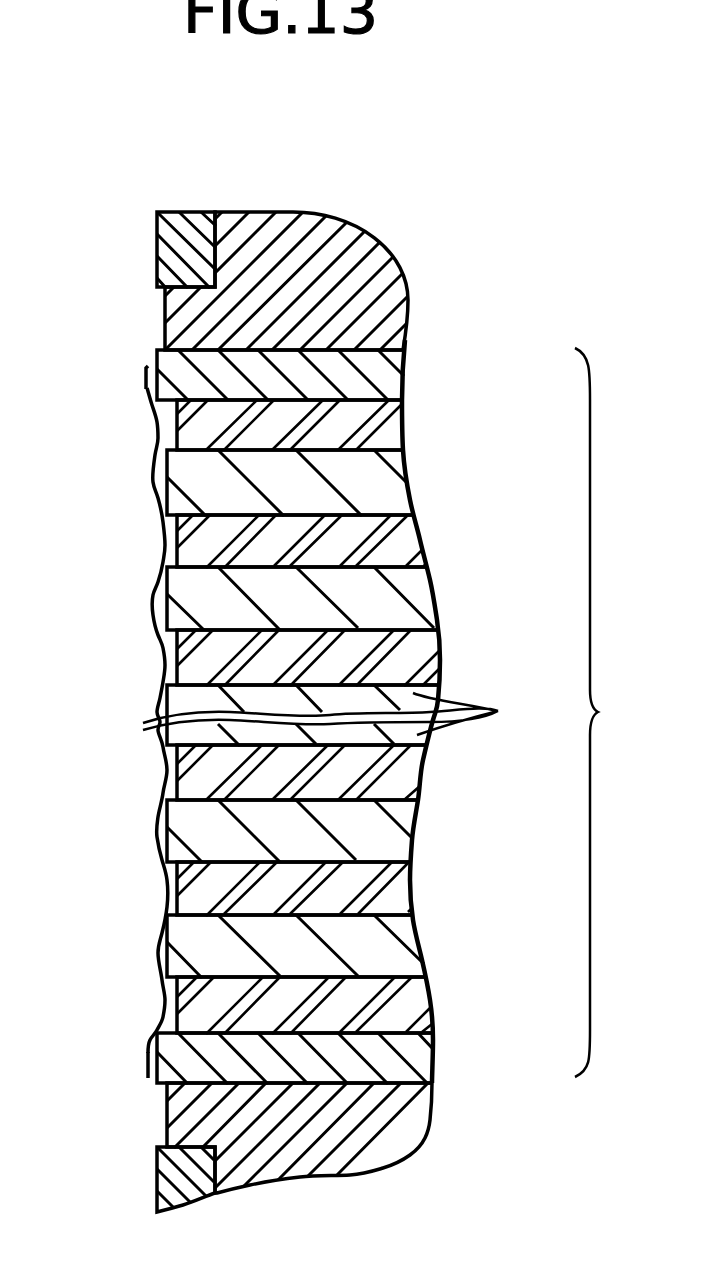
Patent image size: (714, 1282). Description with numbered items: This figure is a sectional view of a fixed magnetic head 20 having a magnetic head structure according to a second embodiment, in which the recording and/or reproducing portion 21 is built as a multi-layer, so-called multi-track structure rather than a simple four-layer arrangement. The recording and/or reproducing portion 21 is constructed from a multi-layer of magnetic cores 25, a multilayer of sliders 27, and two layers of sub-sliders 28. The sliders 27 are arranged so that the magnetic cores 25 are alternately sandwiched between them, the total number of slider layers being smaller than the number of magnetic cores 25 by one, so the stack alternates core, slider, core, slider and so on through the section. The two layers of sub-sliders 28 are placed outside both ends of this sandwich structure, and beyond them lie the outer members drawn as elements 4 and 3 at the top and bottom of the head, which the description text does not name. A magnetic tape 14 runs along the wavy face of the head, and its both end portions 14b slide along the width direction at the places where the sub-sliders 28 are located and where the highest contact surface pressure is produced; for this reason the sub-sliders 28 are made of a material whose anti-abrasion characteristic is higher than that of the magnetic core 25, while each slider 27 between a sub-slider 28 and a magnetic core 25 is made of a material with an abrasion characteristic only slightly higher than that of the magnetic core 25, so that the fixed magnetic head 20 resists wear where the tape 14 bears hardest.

The fixed magnetic head 20 is at (462, 216).
The end plate / cover member 4 is at (393, 295).
The spacer block 3 is at (160, 250).
The sub-slider 28 is at (388, 372).
The slider 27 is at (388, 428).
The magnetic core 25 is at (392, 484).
The recording and/or reproducing portion 21 is at (617, 712).
The magnetic tape 14 is at (157, 958).
The end portion of the magnetic tape 14b is at (143, 376).